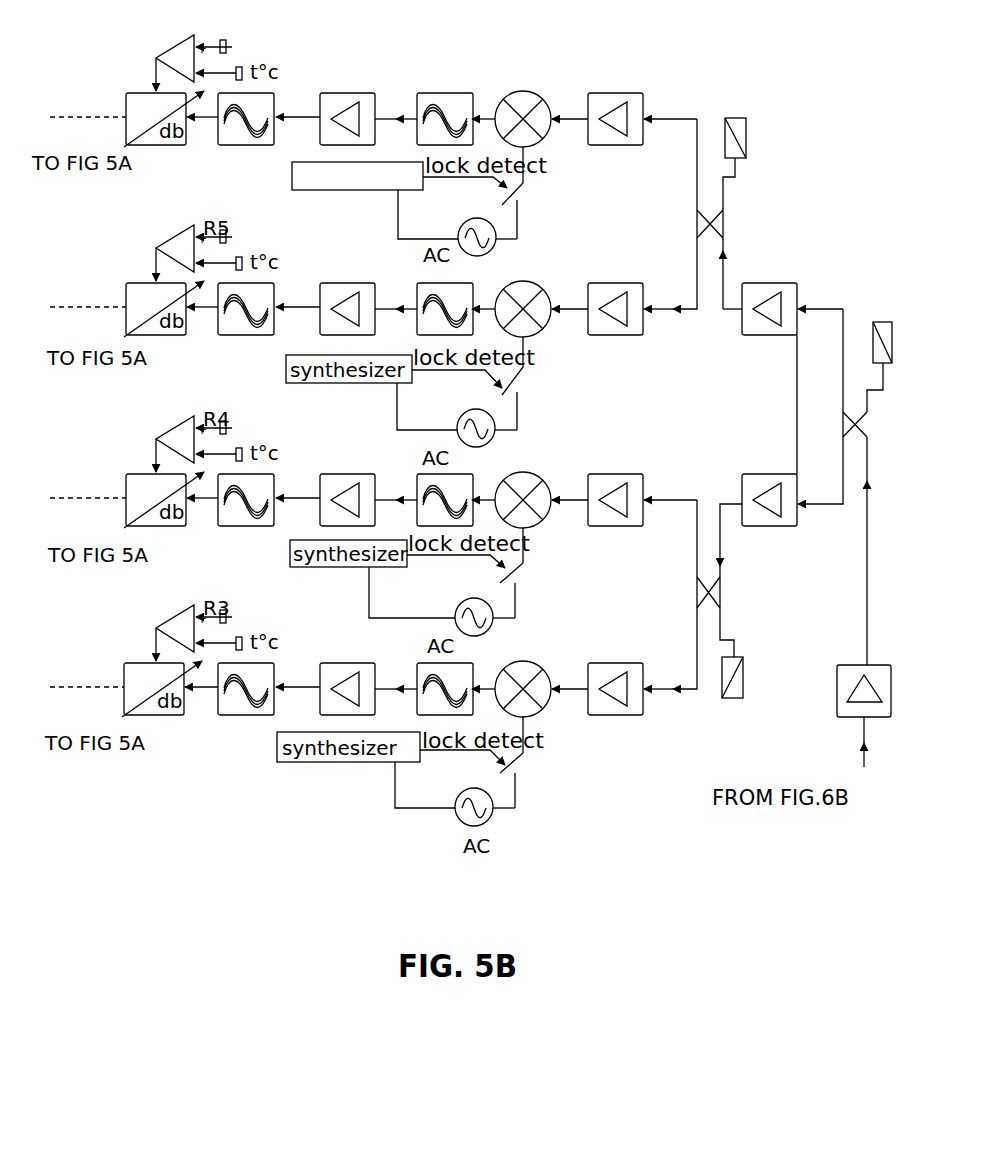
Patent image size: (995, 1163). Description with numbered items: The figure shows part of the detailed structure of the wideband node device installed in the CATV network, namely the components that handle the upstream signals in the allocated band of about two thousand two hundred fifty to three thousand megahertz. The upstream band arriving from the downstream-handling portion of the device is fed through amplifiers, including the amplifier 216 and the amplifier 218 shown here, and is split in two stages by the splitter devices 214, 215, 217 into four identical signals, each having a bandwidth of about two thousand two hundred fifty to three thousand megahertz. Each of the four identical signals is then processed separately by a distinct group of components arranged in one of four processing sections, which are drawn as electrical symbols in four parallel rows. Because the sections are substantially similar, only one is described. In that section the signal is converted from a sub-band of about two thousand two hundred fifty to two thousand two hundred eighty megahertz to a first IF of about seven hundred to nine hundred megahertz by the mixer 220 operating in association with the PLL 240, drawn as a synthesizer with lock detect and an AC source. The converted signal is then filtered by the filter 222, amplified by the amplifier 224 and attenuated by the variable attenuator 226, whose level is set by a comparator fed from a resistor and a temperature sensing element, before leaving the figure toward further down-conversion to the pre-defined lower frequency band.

The splitter device 214 is at (797, 412).
The splitter device 215 is at (697, 268).
The amplifier 216 is at (768, 284).
The splitter device 217 is at (697, 578).
The amplifier 218 is at (628, 79).
The mixer 220 is at (530, 91).
The filter 222 is at (445, 93).
The amplifier 224 is at (368, 75).
The variable attenuator 226 is at (162, 48).
The PLL 240 is at (398, 208).